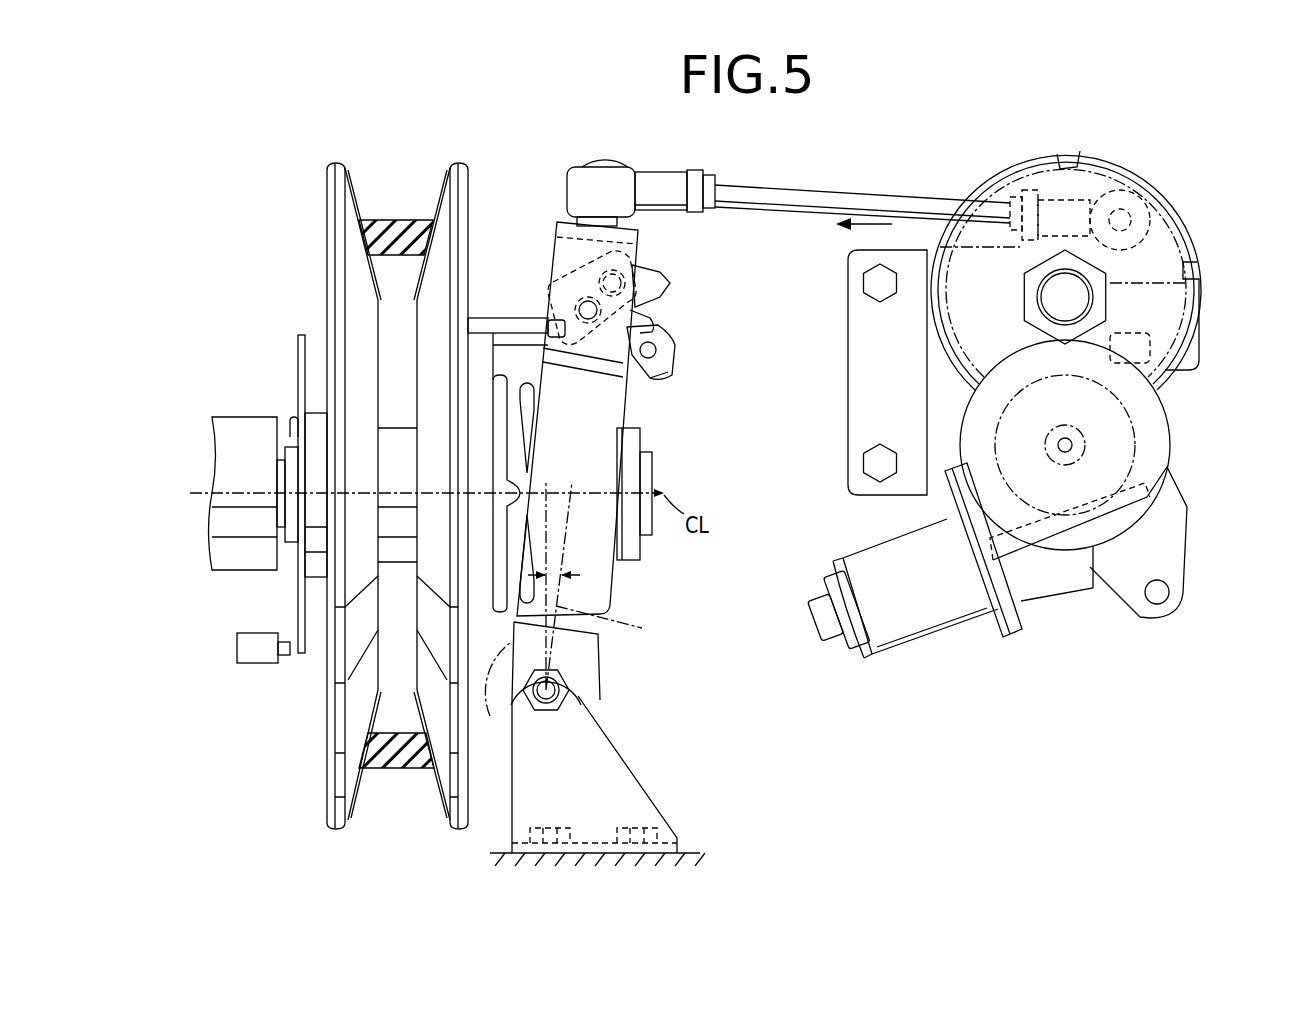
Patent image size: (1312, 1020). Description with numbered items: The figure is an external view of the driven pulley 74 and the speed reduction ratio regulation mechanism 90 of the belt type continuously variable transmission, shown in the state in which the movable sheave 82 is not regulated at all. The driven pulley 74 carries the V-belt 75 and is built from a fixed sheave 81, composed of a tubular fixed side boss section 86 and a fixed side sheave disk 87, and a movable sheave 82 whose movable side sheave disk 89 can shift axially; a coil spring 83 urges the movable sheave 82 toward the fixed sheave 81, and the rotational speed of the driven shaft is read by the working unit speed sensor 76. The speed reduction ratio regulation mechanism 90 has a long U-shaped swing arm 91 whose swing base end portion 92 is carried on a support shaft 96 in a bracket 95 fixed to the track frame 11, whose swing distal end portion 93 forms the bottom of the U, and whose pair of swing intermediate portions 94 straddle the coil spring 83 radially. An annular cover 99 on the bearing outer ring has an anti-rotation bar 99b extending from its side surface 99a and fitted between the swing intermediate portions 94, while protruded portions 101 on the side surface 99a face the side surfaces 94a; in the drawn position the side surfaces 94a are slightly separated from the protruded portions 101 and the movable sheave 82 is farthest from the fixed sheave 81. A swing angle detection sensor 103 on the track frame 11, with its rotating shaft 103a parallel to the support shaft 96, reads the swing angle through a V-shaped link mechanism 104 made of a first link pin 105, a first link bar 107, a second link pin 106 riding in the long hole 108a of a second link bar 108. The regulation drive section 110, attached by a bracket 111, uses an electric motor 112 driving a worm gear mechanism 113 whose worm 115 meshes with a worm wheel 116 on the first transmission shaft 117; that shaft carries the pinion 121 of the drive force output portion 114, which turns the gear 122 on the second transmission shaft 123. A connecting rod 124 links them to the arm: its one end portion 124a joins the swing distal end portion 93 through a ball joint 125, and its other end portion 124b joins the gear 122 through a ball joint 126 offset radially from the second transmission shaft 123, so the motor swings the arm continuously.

The track frame 11 is at (692, 850).
The driven pulley 74 is at (340, 463).
The V-belt 75 is at (404, 219).
The working unit speed sensor 76 is at (242, 650).
The fixed sheave 81 is at (309, 477).
The movable sheave 82 is at (429, 288).
The coil spring 83 is at (527, 418).
The fixed side boss section 86 is at (397, 443).
The fixed side sheave disk 87 is at (350, 347).
The movable side sheave disk 89 is at (425, 337).
The speed reduction ratio regulation mechanism 90 is at (878, 479).
The swing arm 91 is at (739, 484).
The swing base end portion 92 is at (590, 676).
The swing distal end portion 93 is at (630, 228).
The swing intermediate portions 94 is at (588, 578).
The side surfaces of the swing intermediate portions 94a is at (553, 262).
The bracket 95 is at (642, 800).
The support shaft 96 is at (560, 698).
The cover 99 is at (492, 373).
The side surface of the cover 99a is at (507, 337).
The anti-rotation bar 99b is at (527, 325).
The protruded portions 101 is at (510, 487).
The swing angle detection sensor 103 is at (665, 286).
The rotating shaft of the swing angle detection sensor 103a is at (623, 275).
The link mechanism 104 is at (647, 388).
The first link pin 105 is at (583, 297).
The second link pin 106 is at (660, 365).
The first link bar 107 is at (668, 376).
The second link bar 108 is at (652, 322).
The long hole 108a is at (656, 350).
The regulation drive section 110 is at (1045, 431).
The bracket 111 is at (1130, 590).
The electric motor 112 is at (960, 605).
The worm gear mechanism 113 is at (1124, 459).
The drive force output portion 114 is at (1193, 210).
The worm 115 is at (1113, 523).
The worm wheel 116 is at (1130, 467).
The first transmission shaft 117 is at (1070, 448).
The pinion 121 is at (1130, 423).
The gear 122 is at (1190, 350).
The second transmission shaft 123 is at (1075, 298).
The connecting rod 124 is at (858, 195).
The one end portion of the connecting rod 124a is at (722, 192).
The other end portion of the connecting rod 124b is at (1003, 205).
The ball joint 125 is at (607, 180).
The ball joint 126 is at (1122, 190).